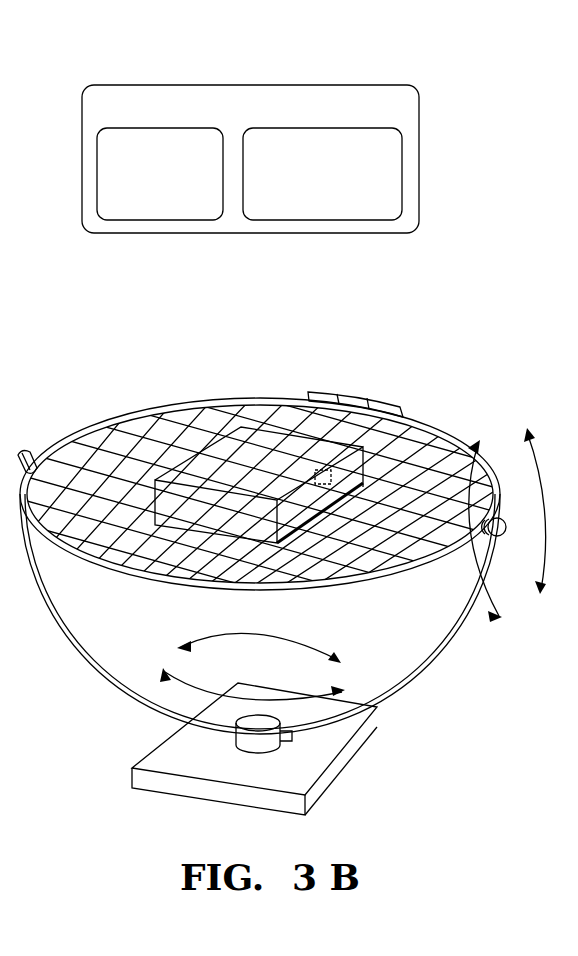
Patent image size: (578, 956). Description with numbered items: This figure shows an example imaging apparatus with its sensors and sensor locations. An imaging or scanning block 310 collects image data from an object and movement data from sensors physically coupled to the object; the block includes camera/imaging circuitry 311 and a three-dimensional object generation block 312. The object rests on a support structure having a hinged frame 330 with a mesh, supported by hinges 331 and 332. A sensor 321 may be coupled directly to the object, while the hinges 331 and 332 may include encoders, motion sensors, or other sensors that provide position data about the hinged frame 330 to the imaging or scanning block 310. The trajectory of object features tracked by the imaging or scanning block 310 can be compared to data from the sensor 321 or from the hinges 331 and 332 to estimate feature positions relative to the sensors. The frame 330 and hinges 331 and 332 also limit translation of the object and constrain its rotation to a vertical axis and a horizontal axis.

The imaging or scanning block 310 is at (383, 80).
The camera/imaging circuitry 311 is at (157, 127).
The 3D object generation block 312 is at (322, 127).
The sensor 321 is at (395, 432).
The hinged frame 330 is at (221, 398).
The hinge 331 is at (322, 752).
The hinge 332 is at (512, 552).